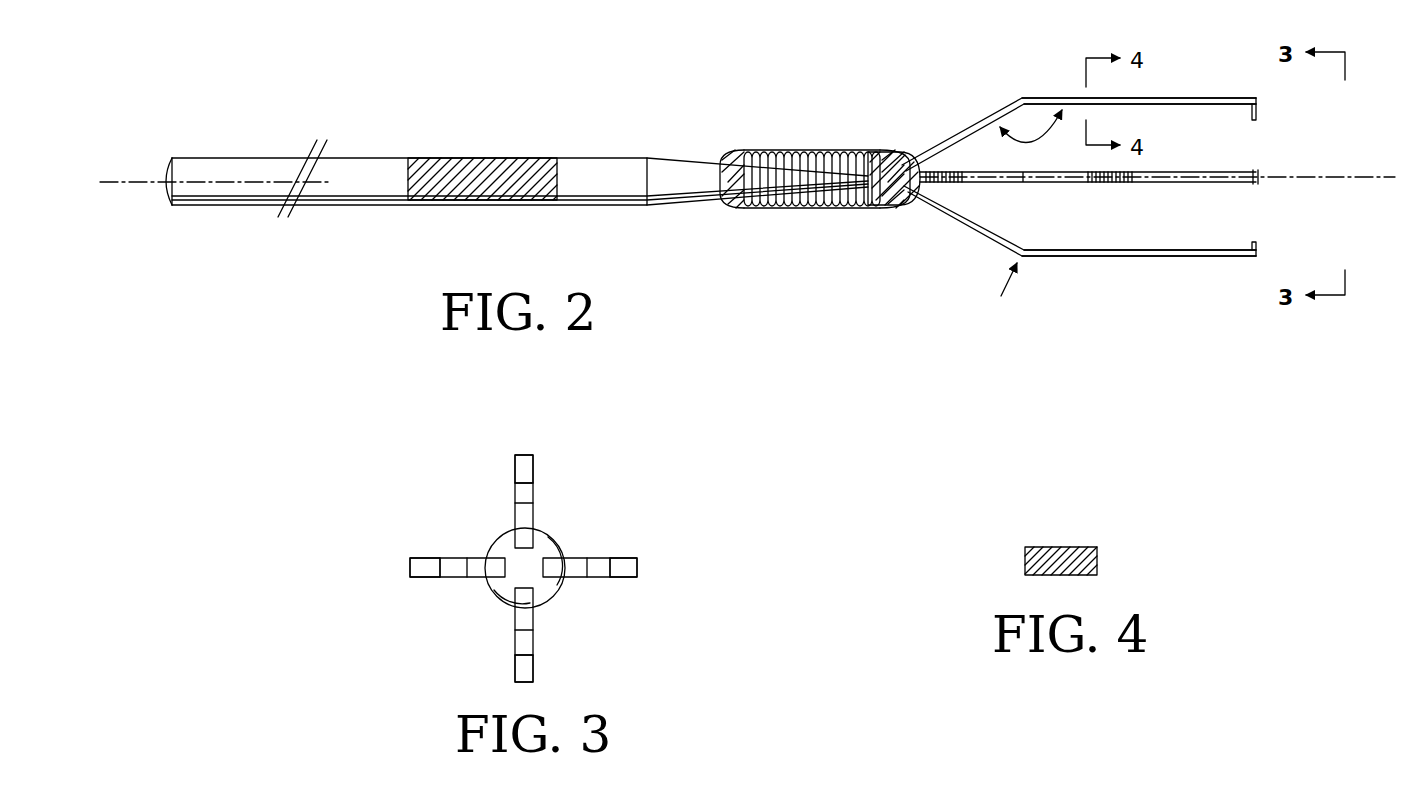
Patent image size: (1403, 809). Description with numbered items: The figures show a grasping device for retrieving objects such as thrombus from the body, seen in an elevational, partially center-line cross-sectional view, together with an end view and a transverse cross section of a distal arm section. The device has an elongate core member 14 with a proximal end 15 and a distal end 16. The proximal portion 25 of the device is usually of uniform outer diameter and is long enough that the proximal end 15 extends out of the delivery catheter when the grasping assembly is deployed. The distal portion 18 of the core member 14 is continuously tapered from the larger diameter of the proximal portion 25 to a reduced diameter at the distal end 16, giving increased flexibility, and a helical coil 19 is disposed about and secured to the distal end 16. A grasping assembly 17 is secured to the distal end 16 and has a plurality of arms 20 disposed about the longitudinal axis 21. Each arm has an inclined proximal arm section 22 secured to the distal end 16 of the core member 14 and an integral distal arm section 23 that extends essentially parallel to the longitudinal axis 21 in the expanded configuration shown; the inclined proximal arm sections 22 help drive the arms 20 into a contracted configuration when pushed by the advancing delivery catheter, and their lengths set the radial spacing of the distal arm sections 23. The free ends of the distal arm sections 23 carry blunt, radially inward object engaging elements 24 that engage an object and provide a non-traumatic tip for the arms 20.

In FIG. 2, the elongate core member 14 is at (605, 163).
In FIG. 2, the proximal end 15 is at (166, 168).
In FIG. 2, the distal end 16 is at (892, 206).
In FIG. 2, the grasping assembly 17 is at (995, 295).
In FIG. 2, the distal portion 18 is at (690, 206).
In FIG. 2, the helical coil 19 is at (752, 150).
In FIG. 3, the helical coil 19 is at (494, 538).
In FIG. 2, the arms 20 is at (1040, 99).
In FIG. 2, the longitudinal axis 21 is at (140, 180).
In FIG. 2, the proximal arm sections 22 is at (950, 146).
In FIG. 3, the proximal arm sections 22 is at (536, 500).
In FIG. 2, the distal arm sections 23 is at (1176, 171).
In FIG. 4, the distal arm sections 23 is at (1070, 546).
In FIG. 2, the object engaging elements 24 is at (1262, 172).
In FIG. 3, the object engaging elements 24 is at (516, 470).
In FIG. 2, the proximal portion 25 is at (356, 206).